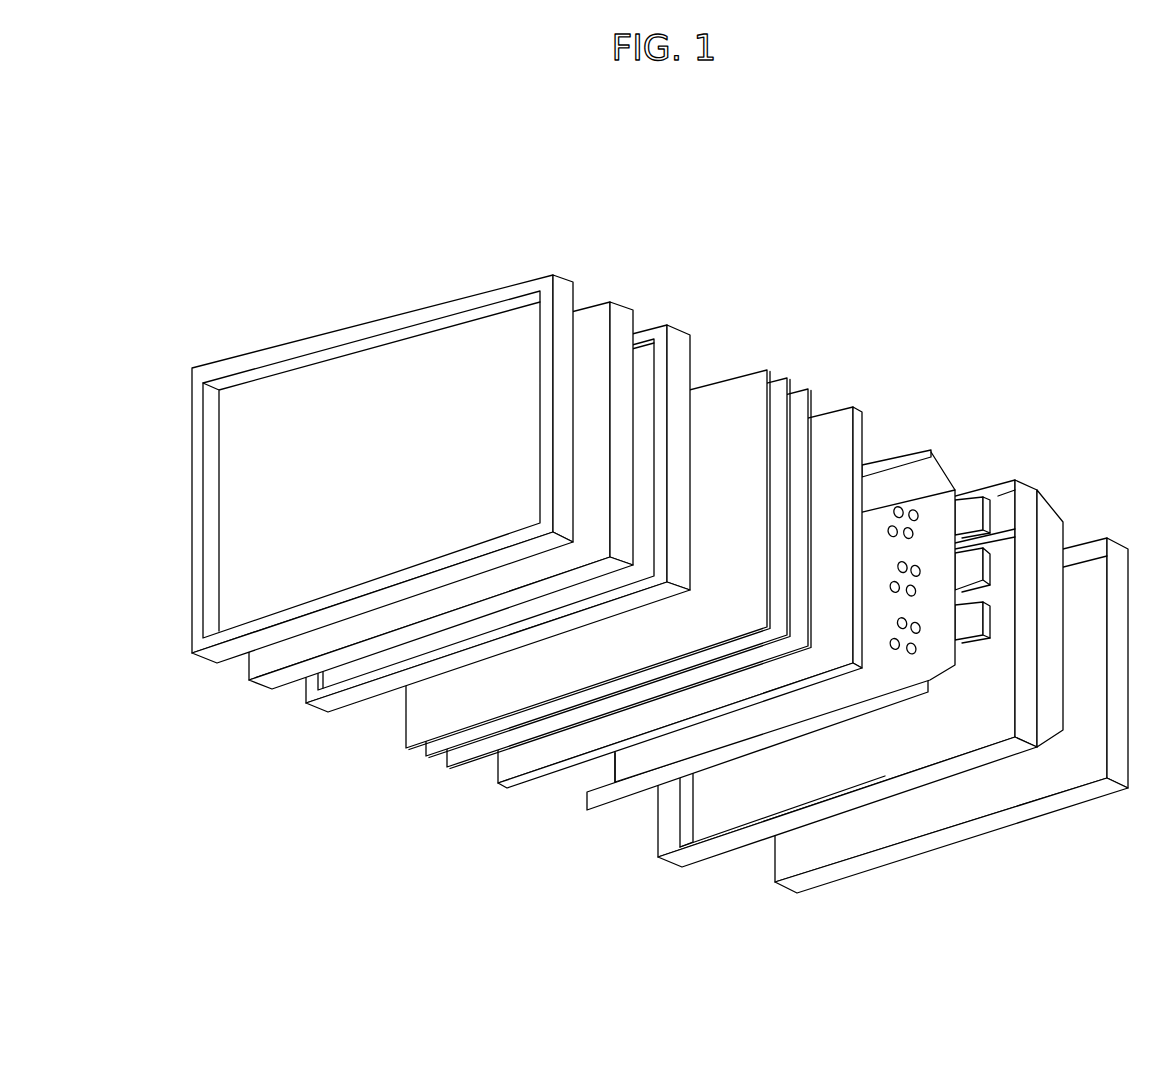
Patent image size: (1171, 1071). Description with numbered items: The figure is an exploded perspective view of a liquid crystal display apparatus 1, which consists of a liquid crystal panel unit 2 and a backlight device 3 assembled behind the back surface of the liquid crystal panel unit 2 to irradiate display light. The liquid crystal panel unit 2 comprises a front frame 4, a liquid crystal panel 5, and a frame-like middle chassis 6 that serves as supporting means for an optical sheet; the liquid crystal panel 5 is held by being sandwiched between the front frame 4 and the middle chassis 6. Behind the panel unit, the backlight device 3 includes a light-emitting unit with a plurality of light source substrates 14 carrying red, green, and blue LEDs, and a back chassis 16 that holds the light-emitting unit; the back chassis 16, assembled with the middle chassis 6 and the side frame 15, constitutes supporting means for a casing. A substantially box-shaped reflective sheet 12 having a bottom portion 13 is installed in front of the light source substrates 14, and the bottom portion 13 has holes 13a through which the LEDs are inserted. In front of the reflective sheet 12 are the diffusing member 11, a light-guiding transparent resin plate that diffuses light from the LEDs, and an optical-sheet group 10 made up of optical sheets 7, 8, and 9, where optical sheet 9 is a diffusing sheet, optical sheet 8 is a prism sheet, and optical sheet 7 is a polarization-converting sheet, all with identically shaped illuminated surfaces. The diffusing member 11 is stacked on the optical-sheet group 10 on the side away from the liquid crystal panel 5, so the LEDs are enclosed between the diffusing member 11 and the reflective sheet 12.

The liquid crystal display apparatus 1 is at (549, 87).
The liquid crystal panel unit 2 is at (731, 230).
The backlight device 3 is at (1149, 418).
The front frame 4 is at (522, 287).
The liquid crystal panel 5 is at (598, 313).
The middle chassis 6 is at (656, 330).
The optical sheet 7 is at (745, 383).
The optical sheet 8 is at (778, 388).
The optical sheet 9 is at (803, 394).
The optical-sheet group 10 is at (824, 339).
The diffusing member 11 is at (838, 418).
The reflective sheet 12 is at (888, 458).
The bottom portion 13 is at (933, 507).
The holes 13a is at (906, 505).
The light source substrates 14 is at (981, 492).
The side frame 15 is at (1030, 500).
The back chassis 16 is at (1086, 548).